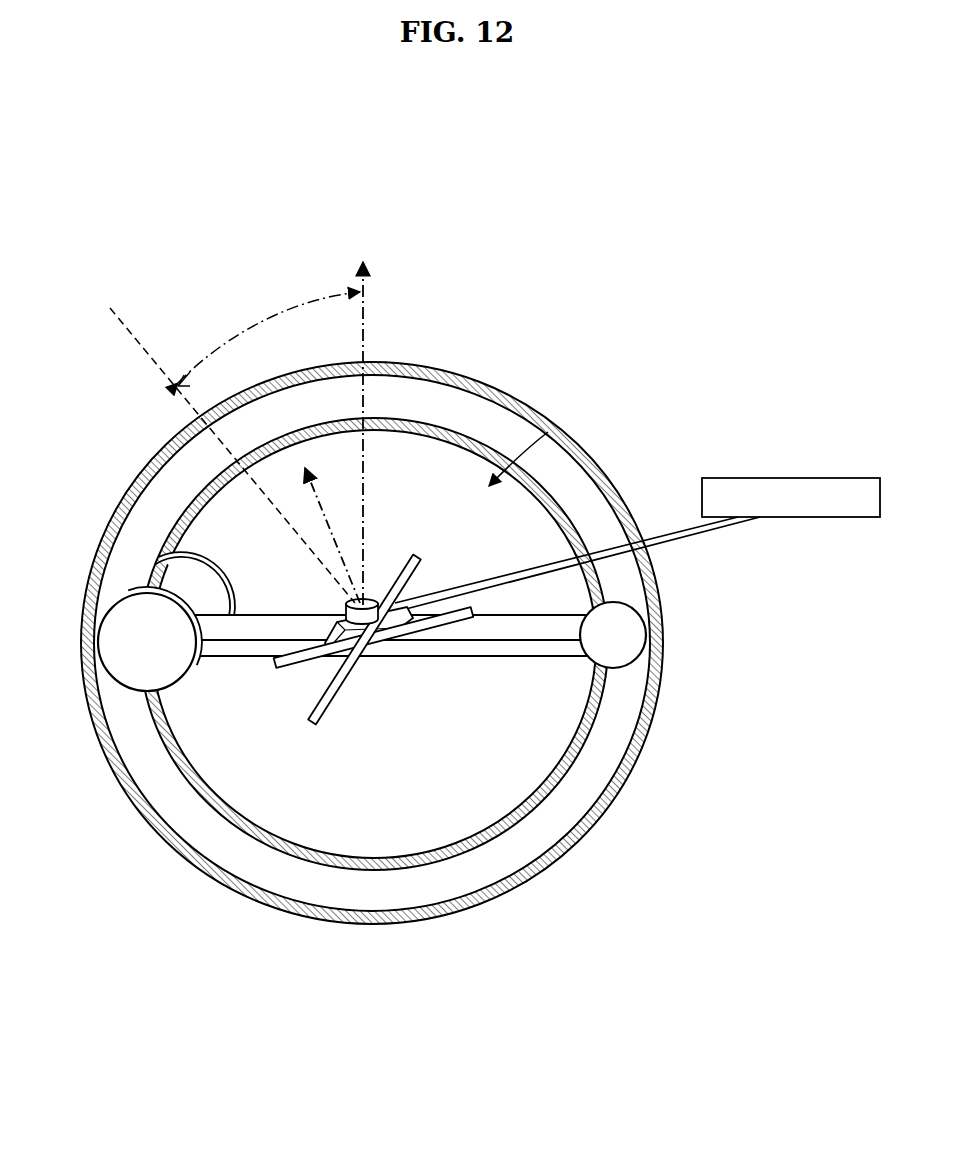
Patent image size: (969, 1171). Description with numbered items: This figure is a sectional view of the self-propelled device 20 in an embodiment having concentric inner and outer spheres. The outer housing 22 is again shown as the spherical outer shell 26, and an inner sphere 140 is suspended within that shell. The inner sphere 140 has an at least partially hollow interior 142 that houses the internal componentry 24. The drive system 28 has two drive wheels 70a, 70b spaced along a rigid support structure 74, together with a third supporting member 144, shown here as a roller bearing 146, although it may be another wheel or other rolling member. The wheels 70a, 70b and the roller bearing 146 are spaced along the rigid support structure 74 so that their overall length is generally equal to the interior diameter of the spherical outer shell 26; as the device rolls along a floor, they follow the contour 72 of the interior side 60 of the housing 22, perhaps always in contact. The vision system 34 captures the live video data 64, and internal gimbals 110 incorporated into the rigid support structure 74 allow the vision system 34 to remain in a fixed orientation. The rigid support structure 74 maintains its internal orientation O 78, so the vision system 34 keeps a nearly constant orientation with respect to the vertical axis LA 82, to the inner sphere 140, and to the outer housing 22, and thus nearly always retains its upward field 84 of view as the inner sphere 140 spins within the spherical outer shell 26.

The self-propelled device 20 is at (512, 884).
The outer housing 22 is at (622, 764).
The spherical outer shell 26 is at (110, 527).
The interior side 60 is at (160, 825).
The contour 72 is at (380, 908).
The inner sphere 140 is at (560, 505).
The partially hollow interior 142 is at (548, 432).
The third supporting member 144 is at (632, 620).
The roller bearing 146 is at (637, 660).
The drive wheel 70a is at (105, 644).
The drive wheel 70b is at (155, 578).
The drive system 28 is at (188, 672).
The rigid support structure 74 is at (527, 657).
The internal componentry 24 is at (402, 675).
The vision system 34 is at (346, 608).
The internal gimbals 110 is at (337, 690).
The live video data 64 is at (796, 478).
The internal orientation O 78 is at (328, 468).
The vertical axis LA 82 is at (415, 264).
The upward field of view 84 is at (267, 318).